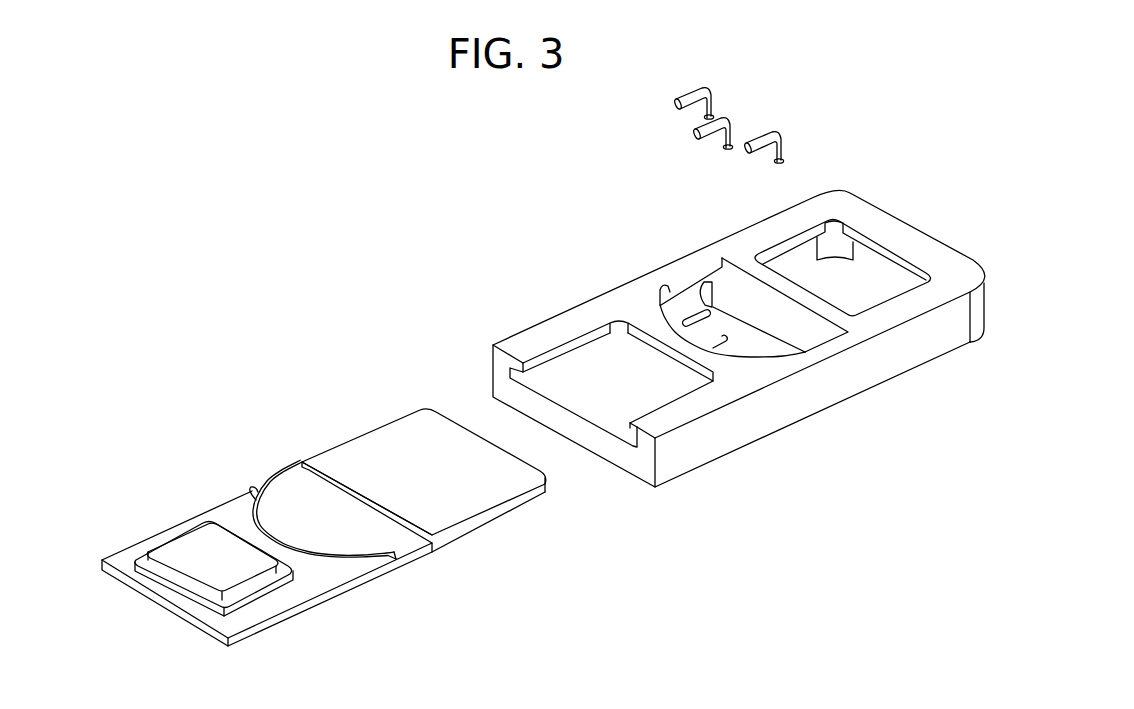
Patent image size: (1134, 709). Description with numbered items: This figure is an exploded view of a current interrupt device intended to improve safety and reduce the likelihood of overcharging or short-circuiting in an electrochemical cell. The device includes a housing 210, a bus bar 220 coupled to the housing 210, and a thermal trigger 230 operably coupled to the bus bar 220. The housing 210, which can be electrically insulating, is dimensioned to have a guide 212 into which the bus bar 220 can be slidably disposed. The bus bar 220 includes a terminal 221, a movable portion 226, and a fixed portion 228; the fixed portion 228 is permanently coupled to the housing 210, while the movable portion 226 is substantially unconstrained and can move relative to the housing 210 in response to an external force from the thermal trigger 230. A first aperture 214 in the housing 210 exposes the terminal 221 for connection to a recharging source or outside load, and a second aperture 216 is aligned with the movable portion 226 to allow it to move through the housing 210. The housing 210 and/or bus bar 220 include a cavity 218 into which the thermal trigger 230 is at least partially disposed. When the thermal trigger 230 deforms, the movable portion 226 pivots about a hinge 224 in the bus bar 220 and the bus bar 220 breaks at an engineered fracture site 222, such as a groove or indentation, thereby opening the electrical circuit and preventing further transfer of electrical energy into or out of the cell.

The housing 210 is at (787, 410).
The guide 212 is at (630, 446).
The first aperture 214 is at (583, 385).
The second aperture 216 is at (792, 332).
The cavity 218 is at (693, 320).
The bus bar 220 is at (308, 448).
The terminal 221 is at (193, 547).
The engineered fracture site 222 is at (248, 492).
The hinge 224 is at (302, 463).
The movable portion 226 is at (337, 527).
The fixed portion 228 is at (445, 490).
The thermal trigger 230 is at (788, 98).